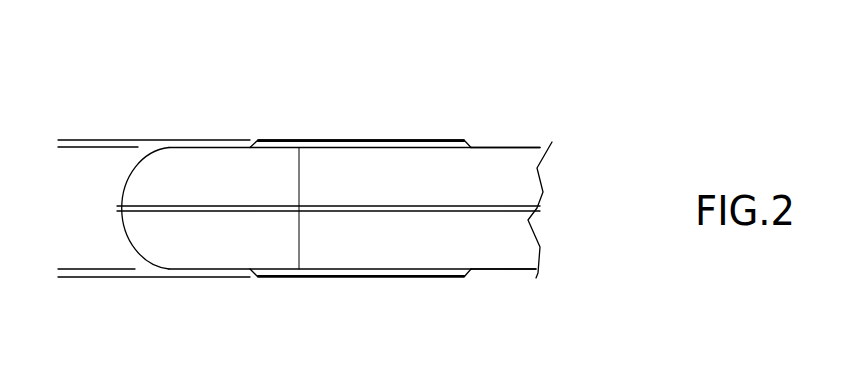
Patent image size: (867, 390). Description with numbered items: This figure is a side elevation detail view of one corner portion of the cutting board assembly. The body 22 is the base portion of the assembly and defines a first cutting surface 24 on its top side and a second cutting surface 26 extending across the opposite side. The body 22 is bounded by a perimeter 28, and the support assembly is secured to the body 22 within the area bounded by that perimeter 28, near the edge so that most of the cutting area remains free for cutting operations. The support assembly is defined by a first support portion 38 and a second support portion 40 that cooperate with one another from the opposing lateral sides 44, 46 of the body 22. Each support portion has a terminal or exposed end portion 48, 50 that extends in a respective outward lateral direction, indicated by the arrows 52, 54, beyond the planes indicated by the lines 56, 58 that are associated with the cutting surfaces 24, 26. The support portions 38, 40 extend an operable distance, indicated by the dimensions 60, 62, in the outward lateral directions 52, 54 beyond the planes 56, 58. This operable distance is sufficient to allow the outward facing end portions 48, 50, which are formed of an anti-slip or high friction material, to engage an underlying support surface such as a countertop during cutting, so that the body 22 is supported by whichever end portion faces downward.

The body 22 is at (530, 157).
The first cutting surface 24 is at (497, 147).
The second cutting surface 26 is at (512, 271).
The perimeter 28 is at (510, 208).
The first support portion 38 is at (390, 139).
The second support portion 40 is at (360, 278).
The lateral side 44 is at (238, 102).
The lateral side 46 is at (236, 306).
The exposed end portion 48 is at (312, 139).
The exposed end portion 50 is at (300, 278).
The outward lateral direction 52 is at (157, 140).
The outward lateral direction 54 is at (137, 277).
The plane 56 is at (100, 148).
The plane 58 is at (107, 268).
The dimension 60 is at (80, 135).
The dimension 62 is at (80, 282).